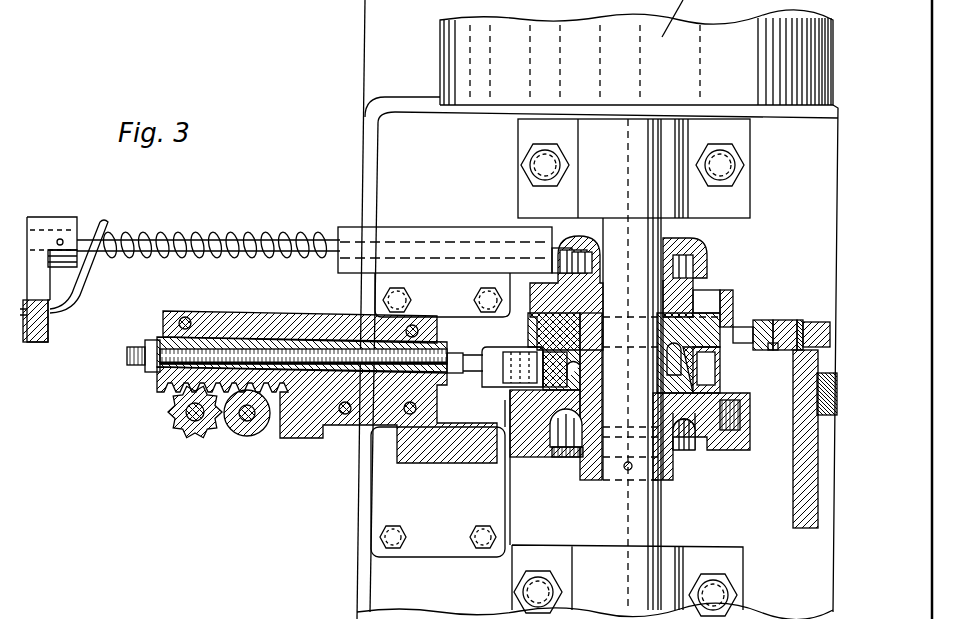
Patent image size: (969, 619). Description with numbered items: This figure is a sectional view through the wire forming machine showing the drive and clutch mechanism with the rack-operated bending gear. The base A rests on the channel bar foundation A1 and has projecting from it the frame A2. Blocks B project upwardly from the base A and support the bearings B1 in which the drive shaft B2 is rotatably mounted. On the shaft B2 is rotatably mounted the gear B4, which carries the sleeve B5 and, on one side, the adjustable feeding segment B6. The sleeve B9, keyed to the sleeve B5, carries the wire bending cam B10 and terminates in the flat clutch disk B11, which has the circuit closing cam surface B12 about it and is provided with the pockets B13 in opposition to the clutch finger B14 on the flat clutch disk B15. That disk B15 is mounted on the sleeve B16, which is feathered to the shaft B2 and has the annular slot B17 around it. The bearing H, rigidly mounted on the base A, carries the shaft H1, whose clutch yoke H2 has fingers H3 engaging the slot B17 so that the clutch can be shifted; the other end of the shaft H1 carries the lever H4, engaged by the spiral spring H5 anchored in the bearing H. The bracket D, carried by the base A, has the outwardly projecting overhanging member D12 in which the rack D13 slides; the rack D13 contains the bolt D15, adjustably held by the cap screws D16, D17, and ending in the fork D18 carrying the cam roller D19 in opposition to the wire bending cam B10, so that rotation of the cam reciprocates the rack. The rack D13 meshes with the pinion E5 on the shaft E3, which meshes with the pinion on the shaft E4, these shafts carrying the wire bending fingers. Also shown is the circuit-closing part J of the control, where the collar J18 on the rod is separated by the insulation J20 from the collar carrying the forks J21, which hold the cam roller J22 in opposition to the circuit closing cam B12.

The base A is at (390, 143).
The channel bar foundation A1 is at (378, 53).
The frame A2 is at (797, 496).
The blocks B is at (745, 138).
The bearings B1 is at (677, 134).
The drive shaft B2 is at (657, 507).
The gear B4 is at (751, 419).
The sleeve B5 is at (663, 377).
The adjustable feeding segment B6 is at (533, 448).
The sleeve B9 is at (660, 390).
The wire bending cam B10 is at (721, 383).
The flat clutch disk B11 is at (725, 351).
The circuit closing cam surface B12 is at (518, 347).
The pockets B13 is at (735, 320).
The clutch finger B14 is at (708, 297).
The flat clutch disk B15 is at (733, 298).
The sleeve B16 is at (692, 250).
The annular slot B17 is at (680, 260).
The bracket D is at (407, 454).
The outwardly projecting overhanging member D12 is at (238, 315).
The rack D13 is at (292, 338).
The bolt D15 is at (133, 345).
The cap screw D16 is at (157, 368).
The cap screw D17 is at (457, 374).
The fork D18 is at (510, 363).
The cam roller D19 is at (482, 270).
The shaft E3 is at (177, 412).
The shaft E4 is at (233, 433).
The pinion E5 is at (183, 435).
The bearing H is at (399, 226).
The shaft H1 is at (247, 233).
The clutch yoke H2 is at (572, 243).
The fingers H3 is at (690, 253).
The lever H4 is at (38, 345).
The spiral spring H5 is at (185, 233).
The bracket J is at (792, 426).
The collar J18 is at (808, 320).
The insulation J20 is at (798, 322).
The forks J21 is at (777, 322).
The cam roller J22 is at (776, 350).